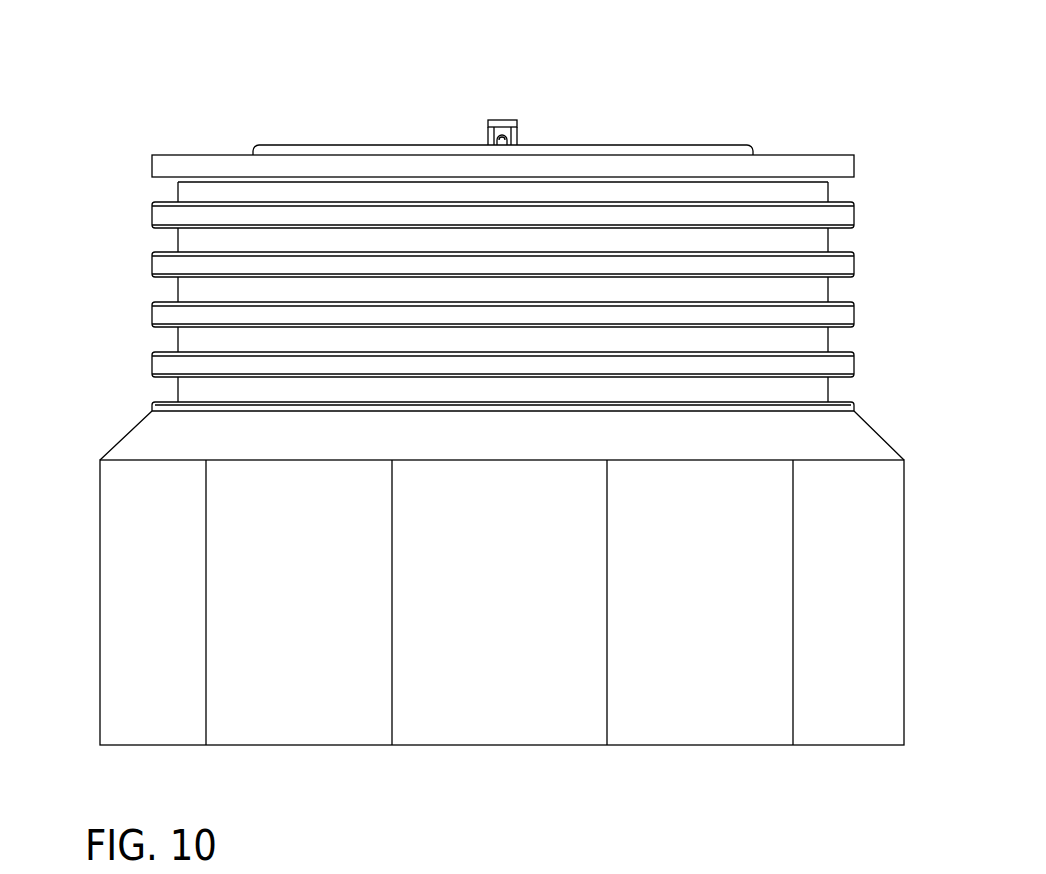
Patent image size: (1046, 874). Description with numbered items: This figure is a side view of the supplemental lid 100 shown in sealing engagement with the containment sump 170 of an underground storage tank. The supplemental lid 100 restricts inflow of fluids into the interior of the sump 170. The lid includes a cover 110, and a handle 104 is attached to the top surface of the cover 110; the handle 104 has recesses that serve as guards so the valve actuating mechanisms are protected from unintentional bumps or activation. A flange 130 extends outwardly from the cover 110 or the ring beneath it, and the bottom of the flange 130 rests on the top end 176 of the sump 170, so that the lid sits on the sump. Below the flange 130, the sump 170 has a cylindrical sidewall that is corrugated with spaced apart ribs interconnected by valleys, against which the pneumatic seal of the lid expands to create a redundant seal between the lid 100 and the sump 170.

The supplemental lid 100 is at (754, 84).
The handle 104 is at (500, 118).
The cover 110 is at (343, 145).
The flange 130 is at (190, 155).
The sump 170 is at (891, 236).
The top end 176 is at (177, 178).